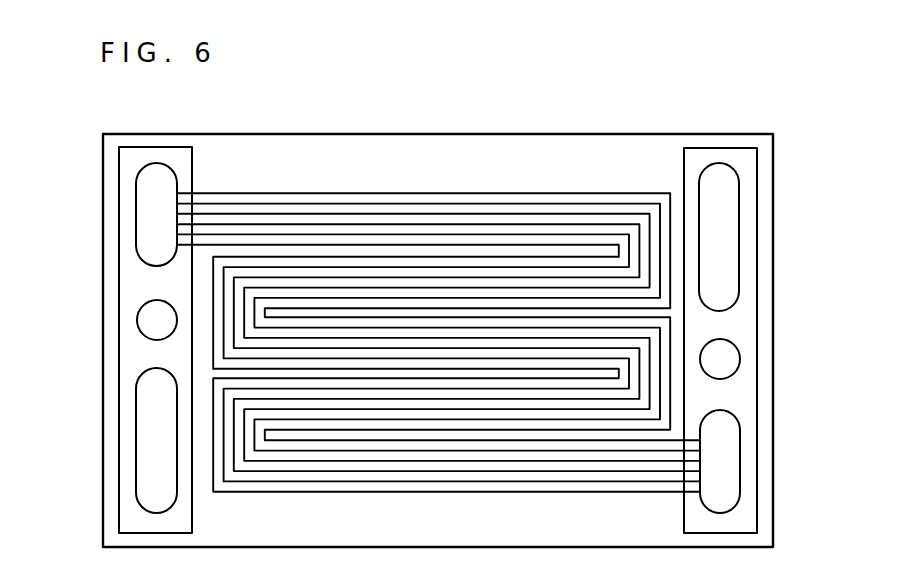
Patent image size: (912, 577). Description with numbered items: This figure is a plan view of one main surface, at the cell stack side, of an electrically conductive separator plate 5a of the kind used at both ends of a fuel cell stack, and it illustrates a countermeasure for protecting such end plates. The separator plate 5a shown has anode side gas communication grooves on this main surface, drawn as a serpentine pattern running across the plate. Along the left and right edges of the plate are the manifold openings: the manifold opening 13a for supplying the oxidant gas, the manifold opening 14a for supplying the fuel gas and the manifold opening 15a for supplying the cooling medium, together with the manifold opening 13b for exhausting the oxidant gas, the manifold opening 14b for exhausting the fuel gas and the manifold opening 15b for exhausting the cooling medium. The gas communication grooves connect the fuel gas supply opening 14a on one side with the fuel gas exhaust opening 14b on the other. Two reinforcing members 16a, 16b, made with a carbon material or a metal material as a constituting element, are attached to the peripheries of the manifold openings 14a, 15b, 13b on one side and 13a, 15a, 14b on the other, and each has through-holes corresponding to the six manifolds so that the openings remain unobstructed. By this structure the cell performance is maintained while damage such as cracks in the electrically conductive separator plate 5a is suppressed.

The electrically conductive separator plate 5a is at (378, 134).
The manifold opening for supplying the oxidant gas 13a is at (727, 248).
The manifold opening for exhausting the oxidant gas 13b is at (157, 415).
The manifold opening for supplying the fuel gas 14a is at (155, 213).
The manifold opening for exhausting the fuel gas 14b is at (727, 470).
The manifold opening for supplying the cooling medium 15a is at (727, 359).
The manifold opening for exhausting the cooling medium 15b is at (157, 322).
The reinforcing member 16a is at (132, 162).
The reinforcing member 16b is at (742, 163).